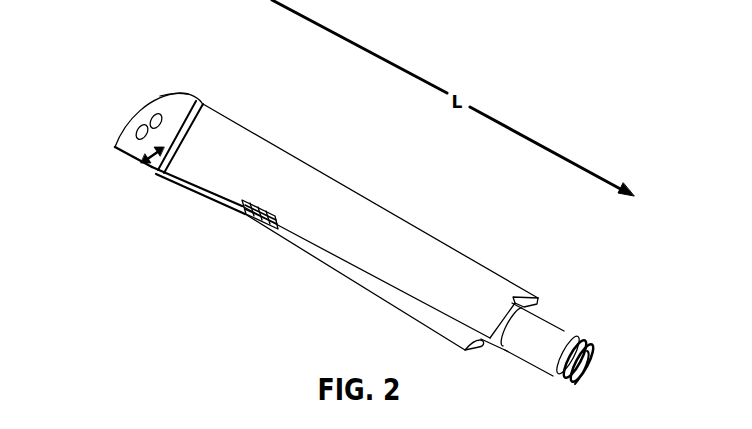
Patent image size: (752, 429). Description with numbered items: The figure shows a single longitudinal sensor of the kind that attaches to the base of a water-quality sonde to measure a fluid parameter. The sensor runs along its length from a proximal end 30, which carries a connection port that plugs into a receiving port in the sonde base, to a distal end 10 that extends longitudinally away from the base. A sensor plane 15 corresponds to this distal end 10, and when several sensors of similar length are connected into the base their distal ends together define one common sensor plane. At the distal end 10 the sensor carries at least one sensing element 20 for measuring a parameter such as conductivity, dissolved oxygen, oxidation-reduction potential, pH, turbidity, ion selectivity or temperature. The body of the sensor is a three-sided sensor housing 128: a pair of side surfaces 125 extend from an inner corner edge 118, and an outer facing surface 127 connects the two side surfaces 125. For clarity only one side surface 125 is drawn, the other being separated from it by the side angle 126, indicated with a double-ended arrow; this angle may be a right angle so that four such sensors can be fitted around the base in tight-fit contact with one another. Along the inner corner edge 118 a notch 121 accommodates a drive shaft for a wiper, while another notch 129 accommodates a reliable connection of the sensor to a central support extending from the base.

The distal end 10 is at (163, 110).
The sensor plane 15 is at (173, 108).
The sensing element 20 is at (120, 147).
The proximal end 30 is at (576, 336).
The inner corner edge 118 is at (150, 170).
The notch 121 is at (193, 192).
The side surface 125 is at (247, 163).
The side angle 126 is at (142, 172).
The outer facing surface 127 is at (125, 131).
The three-sided sensor housing 128 is at (372, 198).
The notch 129 is at (307, 243).